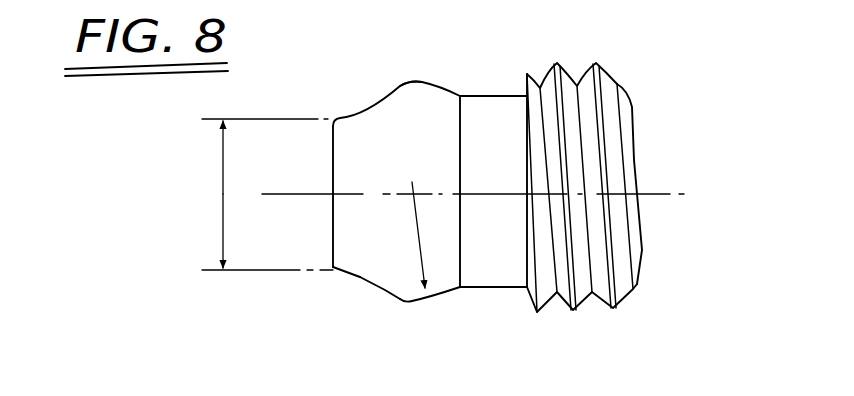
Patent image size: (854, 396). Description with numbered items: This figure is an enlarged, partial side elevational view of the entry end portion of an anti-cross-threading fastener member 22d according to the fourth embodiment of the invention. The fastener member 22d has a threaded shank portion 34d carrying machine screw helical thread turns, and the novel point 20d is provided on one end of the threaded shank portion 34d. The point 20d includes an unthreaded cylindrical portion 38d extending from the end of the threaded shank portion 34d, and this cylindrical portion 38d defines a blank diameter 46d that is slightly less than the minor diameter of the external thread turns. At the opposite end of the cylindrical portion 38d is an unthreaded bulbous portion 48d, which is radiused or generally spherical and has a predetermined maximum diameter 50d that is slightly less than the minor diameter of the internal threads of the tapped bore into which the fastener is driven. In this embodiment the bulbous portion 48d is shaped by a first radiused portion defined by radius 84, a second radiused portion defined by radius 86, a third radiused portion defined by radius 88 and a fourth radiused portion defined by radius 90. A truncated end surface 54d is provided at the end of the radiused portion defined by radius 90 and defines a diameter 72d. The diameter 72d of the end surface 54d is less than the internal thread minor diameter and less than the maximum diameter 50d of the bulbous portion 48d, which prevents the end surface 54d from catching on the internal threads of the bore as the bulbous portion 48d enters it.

The point 20d is at (362, 103).
The fastener member 22d is at (575, 65).
The threaded shank portion 34d is at (607, 283).
The unthreaded cylindrical portion 38d is at (501, 113).
The blank diameter 46d is at (490, 291).
The bulbous portion 48d is at (362, 152).
The maximum diameter 50d is at (410, 79).
The truncated end surface 54d is at (333, 236).
The diameter 72d is at (223, 205).
The radius 84 is at (427, 296).
The radius 86 is at (401, 305).
The radius 88 is at (357, 279).
The radius 90 is at (331, 271).